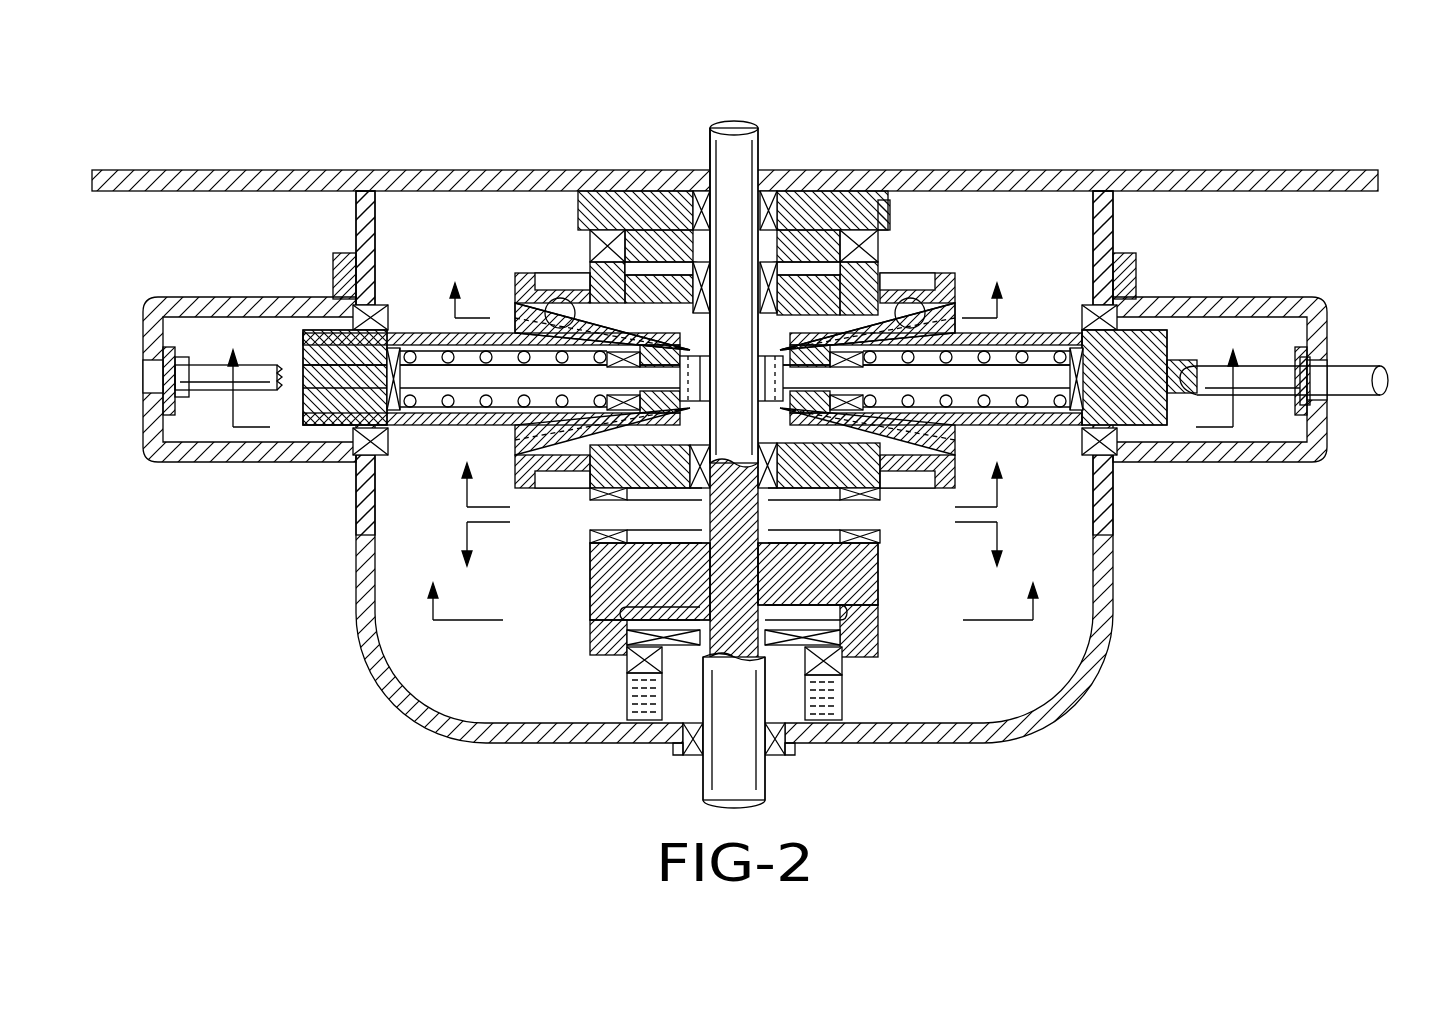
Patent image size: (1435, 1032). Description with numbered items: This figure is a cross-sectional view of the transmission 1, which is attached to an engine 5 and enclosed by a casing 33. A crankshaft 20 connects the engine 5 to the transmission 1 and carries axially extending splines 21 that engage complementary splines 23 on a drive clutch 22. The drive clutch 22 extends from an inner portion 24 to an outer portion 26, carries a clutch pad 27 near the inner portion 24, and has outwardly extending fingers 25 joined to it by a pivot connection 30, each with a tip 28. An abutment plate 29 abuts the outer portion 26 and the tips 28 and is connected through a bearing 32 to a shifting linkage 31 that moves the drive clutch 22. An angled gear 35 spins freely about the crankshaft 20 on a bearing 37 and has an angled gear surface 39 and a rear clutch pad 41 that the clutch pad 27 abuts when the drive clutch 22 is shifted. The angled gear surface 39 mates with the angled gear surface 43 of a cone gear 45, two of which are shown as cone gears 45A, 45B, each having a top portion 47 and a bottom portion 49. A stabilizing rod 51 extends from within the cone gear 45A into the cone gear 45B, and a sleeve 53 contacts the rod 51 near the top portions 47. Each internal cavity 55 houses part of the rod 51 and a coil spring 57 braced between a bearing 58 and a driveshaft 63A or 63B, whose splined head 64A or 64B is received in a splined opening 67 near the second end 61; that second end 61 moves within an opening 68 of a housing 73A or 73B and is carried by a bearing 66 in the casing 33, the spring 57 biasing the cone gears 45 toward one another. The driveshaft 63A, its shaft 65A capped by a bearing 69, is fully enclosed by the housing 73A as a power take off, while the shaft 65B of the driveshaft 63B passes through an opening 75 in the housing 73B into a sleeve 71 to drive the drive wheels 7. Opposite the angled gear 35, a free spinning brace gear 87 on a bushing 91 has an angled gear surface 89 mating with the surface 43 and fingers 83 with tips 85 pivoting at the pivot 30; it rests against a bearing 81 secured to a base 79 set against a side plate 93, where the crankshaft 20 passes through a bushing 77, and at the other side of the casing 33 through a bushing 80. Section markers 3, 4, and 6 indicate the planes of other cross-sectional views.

The transmission 1 is at (1086, 132).
The crankshaft 20 is at (695, 778).
The axially extending splines 21 is at (771, 517).
The drive clutch 22 is at (580, 572).
The complementary splines 23 is at (765, 572).
The inner portion 24 is at (590, 545).
The fingers 25 is at (646, 636).
The outer portion 26 is at (592, 611).
The clutch pad 27 is at (888, 556).
The tip 28 is at (642, 676).
The abutment plate 29 is at (590, 640).
The pivot connection 30 is at (840, 248).
The shifting linkage 31 is at (824, 714).
The bearing 32 is at (778, 642).
The casing 33 is at (358, 626).
The angled gear 35 is at (934, 500).
The bearing 37 is at (650, 581).
The angled gear surface 39 is at (576, 489).
The clutch pad 41 is at (876, 498).
The angled gear surface 43 is at (668, 312).
The cone gear 45 is at (735, 326).
The first cone gear 45A is at (598, 305).
The second cone gear 45B is at (931, 427).
The top portion 47 is at (603, 305).
The bottom portion 49 is at (505, 297).
The stabilizing rod 51 is at (430, 372).
The sleeve 53 is at (790, 372).
The internal cavity 55 is at (415, 404).
The spring 57 is at (430, 358).
The bearing 58 is at (650, 466).
The second end 61 is at (296, 336).
The driveshaft 63A is at (292, 340).
The driveshaft 63B is at (1178, 340).
The splined head 64A is at (326, 410).
The splined head 64B is at (1156, 414).
The shaft 65A is at (190, 444).
The shaft 65B is at (1316, 448).
The bearing 66 is at (386, 456).
The splined opening 67 is at (332, 442).
The opening 68 is at (338, 300).
The bearing 69 is at (172, 378).
The sleeve 71 is at (1355, 366).
The housing 73A is at (175, 297).
The housing 73B is at (1295, 298).
The opening 75 is at (1340, 400).
The bushing 77 is at (768, 186).
The base 79 is at (900, 206).
The bushing 80 is at (690, 750).
The bearing 81 is at (852, 204).
The fingers 83 is at (812, 226).
The tip 85 is at (818, 252).
The brace gear 87 is at (950, 262).
The angled gear surface 89 is at (911, 297).
The bushing 91 is at (648, 262).
The side plate 93 is at (1012, 170).
The section line 3- 3 is at (731, 471).
The section line 4- 4 is at (732, 376).
The engine 5 is at (726, 300).
The section line 6- 6 is at (733, 560).
The drive wheels 7 is at (731, 586).